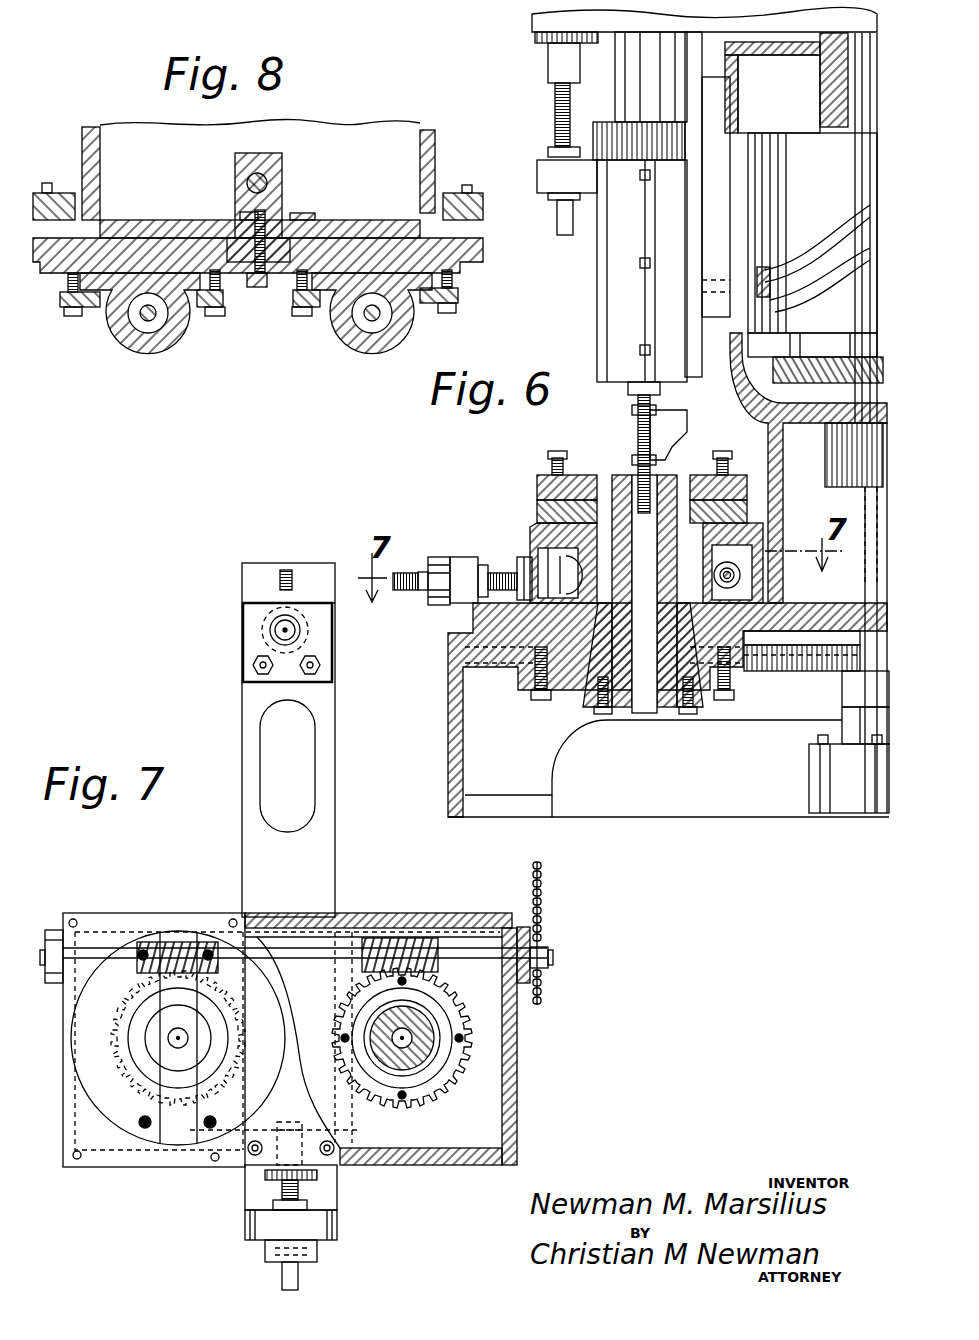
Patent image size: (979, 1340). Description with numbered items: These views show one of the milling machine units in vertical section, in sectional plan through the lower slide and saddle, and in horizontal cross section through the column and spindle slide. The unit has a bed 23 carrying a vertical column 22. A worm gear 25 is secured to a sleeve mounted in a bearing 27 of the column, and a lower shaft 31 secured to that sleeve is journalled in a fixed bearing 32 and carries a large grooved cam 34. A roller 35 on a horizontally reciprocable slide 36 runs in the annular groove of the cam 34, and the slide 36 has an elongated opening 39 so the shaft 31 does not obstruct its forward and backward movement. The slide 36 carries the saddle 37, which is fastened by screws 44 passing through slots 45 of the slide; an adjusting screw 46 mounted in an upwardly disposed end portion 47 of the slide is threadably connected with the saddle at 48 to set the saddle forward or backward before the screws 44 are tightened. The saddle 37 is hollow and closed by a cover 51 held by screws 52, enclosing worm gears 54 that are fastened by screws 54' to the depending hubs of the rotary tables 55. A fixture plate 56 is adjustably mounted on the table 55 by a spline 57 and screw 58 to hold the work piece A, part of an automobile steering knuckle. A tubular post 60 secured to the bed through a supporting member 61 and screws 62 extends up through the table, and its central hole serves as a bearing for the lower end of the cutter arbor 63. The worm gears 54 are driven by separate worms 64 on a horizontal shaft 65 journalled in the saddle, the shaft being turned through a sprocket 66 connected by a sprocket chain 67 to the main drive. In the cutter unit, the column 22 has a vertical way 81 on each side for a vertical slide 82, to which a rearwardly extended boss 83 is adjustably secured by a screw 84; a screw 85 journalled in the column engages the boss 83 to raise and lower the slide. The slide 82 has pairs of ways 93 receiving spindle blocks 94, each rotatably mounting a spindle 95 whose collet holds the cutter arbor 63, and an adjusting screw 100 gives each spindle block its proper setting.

In FIG. 8, the vertical column 22 is at (370, 134).
In FIG. 6, the bed 23 is at (533, 768).
In FIG. 6, the worm gear 25 is at (828, 381).
In FIG. 6, the bearing 27 is at (844, 458).
In FIG. 6, the lower shaft 31 is at (867, 507).
In FIG. 6, the fixed bearing 32 is at (842, 745).
In FIG. 6, the grooved cam 34 is at (835, 667).
In FIG. 7, the roller 35 is at (306, 639).
In FIG. 6, the slide 36 is at (805, 635).
In FIG. 7, the slide 36 is at (322, 813).
In FIG. 6, the saddle 37 is at (772, 542).
In FIG. 7, the saddle 37 is at (515, 1098).
In FIG. 7, the elongated opening 39 is at (312, 770).
In FIG. 7, the screw 44 is at (243, 1168).
In FIG. 7, the slot 45 is at (273, 917).
In FIG. 6, the adjusting screw 46 is at (408, 573).
In FIG. 7, the adjusting screw 46 is at (283, 1190).
In FIG. 6, the upwardly disposed end portion 47 is at (460, 557).
In FIG. 7, the upwardly disposed end portion 47 is at (328, 1210).
In FIG. 6, the threaded connection 48 is at (550, 563).
In FIG. 7, the threaded connection 48 is at (333, 1135).
In FIG. 6, the cover 51 is at (537, 527).
In FIG. 7, the cover 51 is at (290, 1043).
In FIG. 7, the screw 52 is at (73, 921).
In FIG. 6, the worm gear 54 is at (607, 651).
In FIG. 7, the worm gear 54 is at (293, 1050).
In FIG. 6, the screw 54' is at (702, 683).
In FIG. 7, the screw 54' is at (421, 1038).
In FIG. 6, the rotary table 55 is at (540, 507).
In FIG. 7, the rotary table 55 is at (90, 1053).
In FIG. 6, the fixture plate 56 is at (547, 480).
In FIG. 7, the spline 57 is at (178, 1137).
In FIG. 6, the screw 58 is at (558, 458).
In FIG. 7, the screw 58 is at (145, 1122).
In FIG. 6, the tubular post 60 is at (632, 712).
In FIG. 7, the tubular post 60 is at (460, 1090).
In FIG. 6, the supporting member 61 is at (695, 684).
In FIG. 6, the screw 62 is at (603, 717).
In FIG. 6, the cutter arbor 63 is at (638, 431).
In FIG. 6, the worm 64 is at (750, 562).
In FIG. 7, the worm 64 is at (170, 942).
In FIG. 6, the horizontal shaft 65 is at (745, 591).
In FIG. 7, the horizontal shaft 65 is at (320, 960).
In FIG. 7, the sprocket 66 is at (548, 975).
In FIG. 7, the sprocket chain 67 is at (542, 897).
In FIG. 8, the vertical way 81 is at (63, 197).
In FIG. 8, the vertical slide 82 is at (160, 250).
In FIG. 6, the vertical slide 82 is at (717, 163).
In FIG. 8, the boss 83 is at (272, 193).
In FIG. 8, the screw 84 is at (260, 288).
In FIG. 8, the screw 85 is at (278, 168).
In FIG. 8, the ways 93 is at (88, 308).
In FIG. 8, the spindle block 94 is at (157, 328).
In FIG. 6, the spindle block 94 is at (610, 305).
In FIG. 8, the spindle 95 is at (155, 334).
In FIG. 6, the spindle 95 is at (625, 97).
In FIG. 6, the adjusting screw 100 is at (553, 110).
In FIG. 6, the work piece A is at (688, 428).